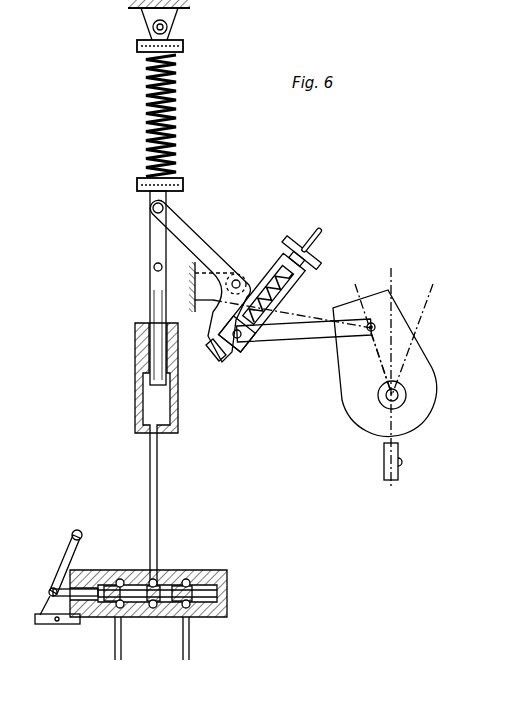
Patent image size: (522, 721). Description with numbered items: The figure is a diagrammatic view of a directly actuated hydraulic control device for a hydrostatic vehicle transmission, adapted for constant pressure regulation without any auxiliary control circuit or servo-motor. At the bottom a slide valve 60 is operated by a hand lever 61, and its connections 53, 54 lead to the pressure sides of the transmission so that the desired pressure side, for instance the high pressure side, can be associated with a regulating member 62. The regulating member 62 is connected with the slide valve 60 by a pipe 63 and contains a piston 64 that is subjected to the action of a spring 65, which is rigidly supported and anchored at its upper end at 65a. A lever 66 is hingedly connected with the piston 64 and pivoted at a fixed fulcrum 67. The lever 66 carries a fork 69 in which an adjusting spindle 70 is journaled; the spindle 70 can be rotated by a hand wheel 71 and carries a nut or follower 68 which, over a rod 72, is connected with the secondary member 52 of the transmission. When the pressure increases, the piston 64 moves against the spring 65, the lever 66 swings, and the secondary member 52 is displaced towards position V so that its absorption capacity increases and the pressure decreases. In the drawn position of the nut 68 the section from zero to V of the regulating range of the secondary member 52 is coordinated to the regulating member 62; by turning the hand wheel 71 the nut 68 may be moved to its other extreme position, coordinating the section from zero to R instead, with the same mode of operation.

The secondary member 52 is at (431, 364).
The pipe 53 is at (115, 645).
The pipe 54 is at (189, 648).
The slide valve 60 is at (207, 572).
The lever 61 is at (63, 560).
The regulating member 62 is at (178, 400).
The pipe 63 is at (157, 472).
The piston 64 is at (154, 305).
The spring 65 is at (178, 84).
The spring anchorage 65a is at (182, 40).
The lever 66 is at (187, 236).
The fulcrum 67 is at (239, 278).
The nut 68 is at (240, 340).
The fork 69 is at (223, 360).
The adjusting spindle 70 is at (274, 300).
The hand wheel 71 is at (317, 249).
The rod 72 is at (308, 340).